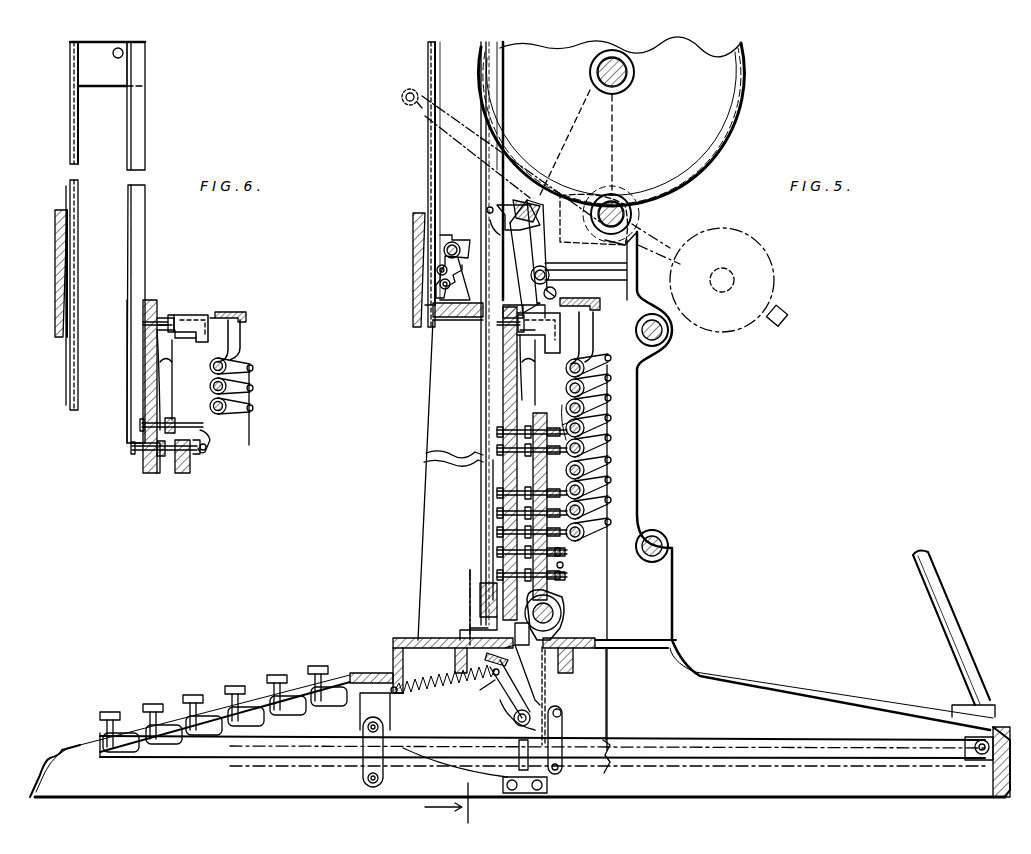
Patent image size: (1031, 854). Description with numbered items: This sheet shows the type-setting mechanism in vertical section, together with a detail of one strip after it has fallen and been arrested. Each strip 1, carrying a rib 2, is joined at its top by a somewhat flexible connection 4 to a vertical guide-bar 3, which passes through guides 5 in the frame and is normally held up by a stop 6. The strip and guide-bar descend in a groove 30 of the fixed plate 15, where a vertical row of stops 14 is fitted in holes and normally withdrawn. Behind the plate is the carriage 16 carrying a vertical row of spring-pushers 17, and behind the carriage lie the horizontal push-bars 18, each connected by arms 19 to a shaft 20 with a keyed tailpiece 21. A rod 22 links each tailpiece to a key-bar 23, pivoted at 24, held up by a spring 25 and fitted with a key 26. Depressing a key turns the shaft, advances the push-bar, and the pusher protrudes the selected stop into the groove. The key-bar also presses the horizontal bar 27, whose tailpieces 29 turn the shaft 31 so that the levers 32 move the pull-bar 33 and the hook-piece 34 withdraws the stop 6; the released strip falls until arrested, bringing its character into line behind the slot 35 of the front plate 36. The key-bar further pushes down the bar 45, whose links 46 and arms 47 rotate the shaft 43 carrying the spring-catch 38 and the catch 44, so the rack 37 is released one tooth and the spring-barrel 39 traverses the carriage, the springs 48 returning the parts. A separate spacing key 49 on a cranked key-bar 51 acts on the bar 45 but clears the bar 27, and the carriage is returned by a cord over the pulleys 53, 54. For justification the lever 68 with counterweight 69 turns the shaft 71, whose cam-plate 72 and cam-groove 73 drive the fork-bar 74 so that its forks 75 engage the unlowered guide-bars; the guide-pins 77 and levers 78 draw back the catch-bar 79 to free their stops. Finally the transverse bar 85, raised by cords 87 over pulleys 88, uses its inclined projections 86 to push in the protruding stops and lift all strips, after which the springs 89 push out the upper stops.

In FIG. 6, the strip 1 is at (64, 226).
In FIG. 5, the strip 1 is at (428, 157).
In FIG. 6, the rib 2 is at (78, 146).
In FIG. 5, the rib 2 is at (443, 173).
In FIG. 6, the guide-bar 3 is at (145, 114).
In FIG. 5, the guide-bar 3 is at (497, 92).
In FIG. 6, the connection 4 is at (107, 64).
In FIG. 5, the guides 5 is at (490, 318).
In FIG. 6, the stop 6 is at (166, 318).
In FIG. 5, the stop 6 is at (500, 324).
In FIG. 6, the stops 14 is at (140, 426).
In FIG. 5, the stops 14 is at (497, 494).
In FIG. 6, the plate 15 is at (143, 391).
In FIG. 5, the plate 15 is at (503, 392).
In FIG. 6, the carriage 16 is at (190, 462).
In FIG. 5, the carriage 16 is at (487, 211).
In FIG. 6, the spring-pushers 17 is at (208, 432).
In FIG. 5, the spring-pushers 17 is at (560, 596).
In FIG. 5, the push-bars 18 is at (567, 552).
In FIG. 5, the arms 19 is at (565, 565).
In FIG. 5, the shaft 20 is at (612, 416).
In FIG. 6, the tailpiece 21 is at (253, 395).
In FIG. 5, the tailpiece 21 is at (612, 436).
In FIG. 6, the rod 22 is at (253, 421).
In FIG. 5, the rod 22 is at (608, 618).
In FIG. 5, the key-bar 23 is at (770, 757).
In FIG. 5, the pivot 24 is at (978, 754).
In FIG. 5, the spring 25 is at (455, 768).
In FIG. 5, the key 26 is at (318, 665).
In FIG. 5, the horizontal bar 27 is at (610, 770).
In FIG. 6, the tailpieces 29 is at (253, 378).
In FIG. 5, the tailpieces 29 is at (612, 376).
In FIG. 5, the grooves 30 is at (497, 410).
In FIG. 6, the shaft 31 is at (240, 360).
In FIG. 5, the shaft 31 is at (605, 360).
In FIG. 6, the levers 32 is at (243, 330).
In FIG. 5, the levers 32 is at (595, 342).
In FIG. 6, the pull-bar 33 is at (232, 312).
In FIG. 5, the pull-bar 33 is at (596, 310).
In FIG. 6, the hook-piece 34 is at (190, 313).
In FIG. 5, the hook-piece 34 is at (562, 318).
In FIG. 6, the slot 35 is at (65, 268).
In FIG. 5, the slot 35 is at (437, 284).
In FIG. 6, the plate 36 is at (57, 234).
In FIG. 5, the plate 36 is at (412, 233).
In FIG. 5, the rack 37 is at (573, 665).
In FIG. 5, the spring-catch 38 is at (545, 680).
In FIG. 5, the spring-barrel 39 is at (525, 766).
In FIG. 5, the shaft 43 is at (514, 722).
In FIG. 5, the catch 44 is at (505, 700).
In FIG. 5, the horizontal bar 45 is at (560, 770).
In FIG. 5, the links 46 is at (563, 720).
In FIG. 5, the arms 47 is at (560, 710).
In FIG. 5, the springs 48 is at (397, 694).
In FIG. 5, the key 49 is at (108, 712).
In FIG. 5, the key-bar 51 is at (130, 757).
In FIG. 5, the pulley 53 is at (488, 658).
In FIG. 5, the pulley 54 is at (470, 680).
In FIG. 5, the lever 68 is at (410, 108).
In FIG. 5, the counterweight 69 is at (774, 272).
In FIG. 5, the shaft 71 is at (615, 205).
In FIG. 5, the plate 72 is at (569, 253).
In FIG. 5, the cam-groove 73 is at (500, 205).
In FIG. 5, the bar 74 is at (555, 205).
In FIG. 5, the forks 75 is at (540, 175).
In FIG. 5, the guide-pins 77 is at (548, 270).
In FIG. 5, the levers 78 is at (575, 270).
In FIG. 5, the catch-bar 79 is at (557, 293).
In FIG. 5, the transverse bar 85 is at (480, 590).
In FIG. 5, the inclined projections 86 is at (480, 605).
In FIG. 5, the cords 87 is at (493, 510).
In FIG. 5, the pulleys 88 is at (735, 122).
In FIG. 6, the springs 89 is at (143, 343).
In FIG. 5, the springs 89 is at (500, 353).